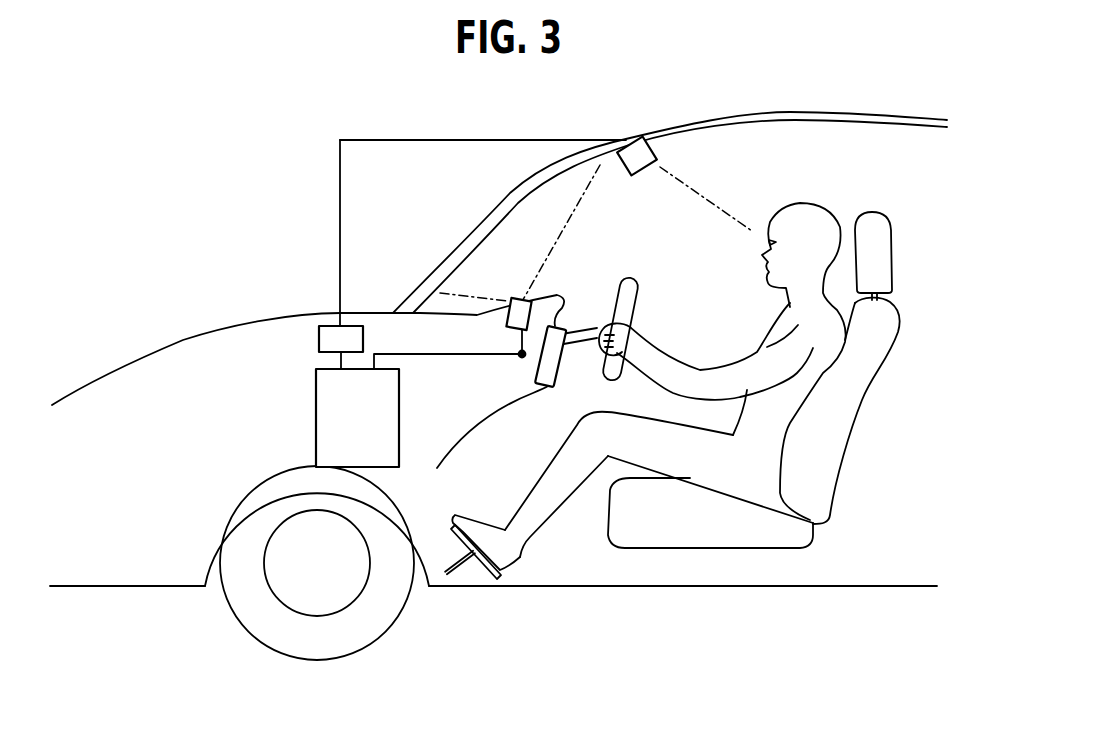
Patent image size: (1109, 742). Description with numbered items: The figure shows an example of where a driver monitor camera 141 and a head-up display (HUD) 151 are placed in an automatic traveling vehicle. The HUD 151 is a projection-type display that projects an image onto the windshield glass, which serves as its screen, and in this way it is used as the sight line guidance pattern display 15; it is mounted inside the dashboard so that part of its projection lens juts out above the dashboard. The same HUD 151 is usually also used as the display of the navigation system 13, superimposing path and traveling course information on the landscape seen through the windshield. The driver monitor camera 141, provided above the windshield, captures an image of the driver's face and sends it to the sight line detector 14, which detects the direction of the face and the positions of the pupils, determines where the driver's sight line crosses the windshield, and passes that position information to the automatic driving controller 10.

The automatic driving controller 10 is at (316, 395).
The navigation system 13 is at (545, 376).
The sight line detector 14 is at (319, 339).
The sight line guidance pattern display 15 is at (589, 286).
The head-up display (HUD) 151 is at (533, 308).
The driver monitor camera 141 is at (647, 157).